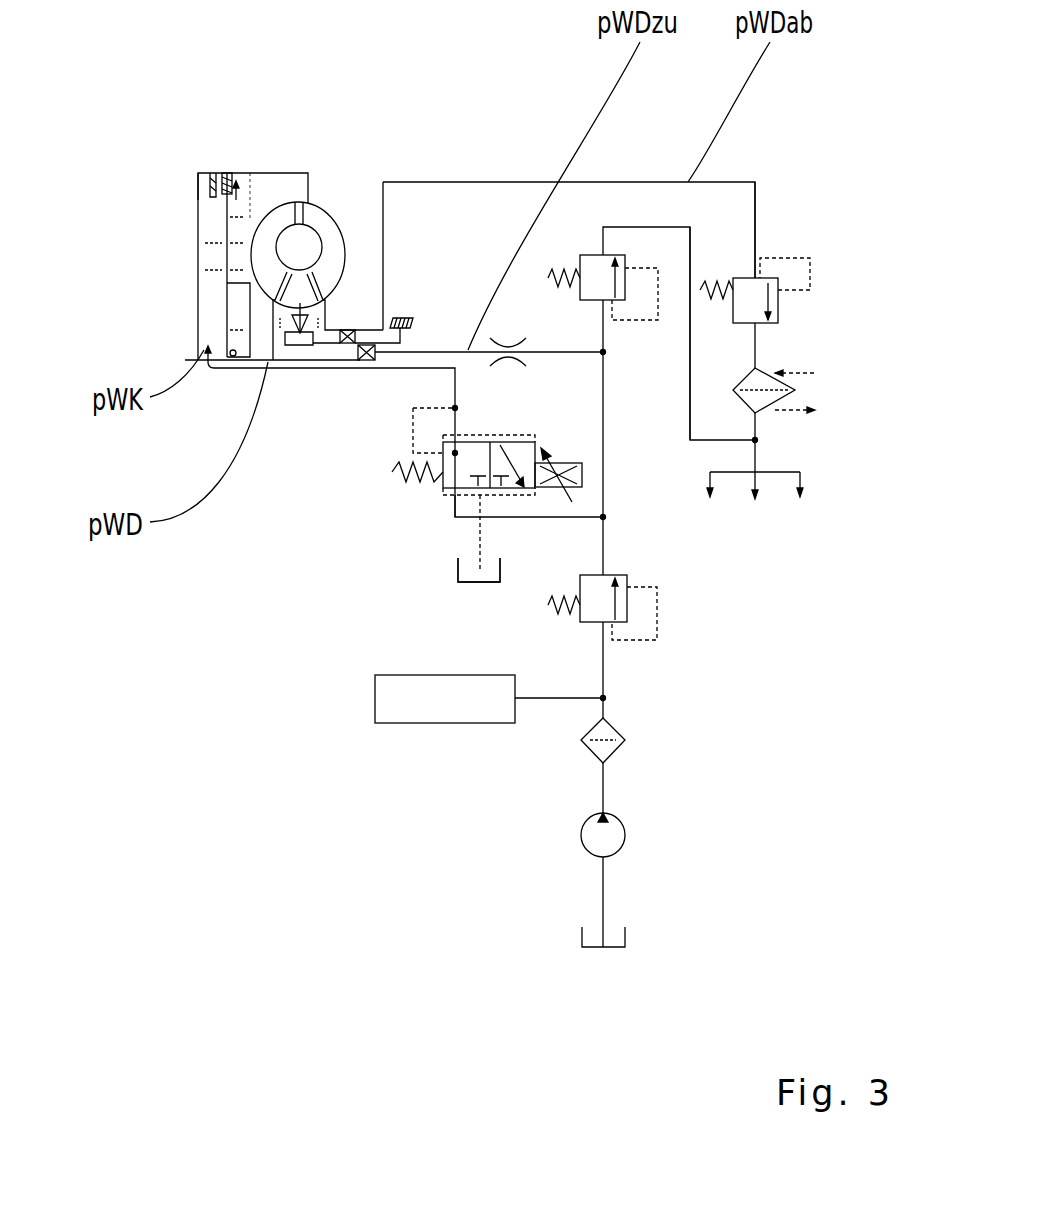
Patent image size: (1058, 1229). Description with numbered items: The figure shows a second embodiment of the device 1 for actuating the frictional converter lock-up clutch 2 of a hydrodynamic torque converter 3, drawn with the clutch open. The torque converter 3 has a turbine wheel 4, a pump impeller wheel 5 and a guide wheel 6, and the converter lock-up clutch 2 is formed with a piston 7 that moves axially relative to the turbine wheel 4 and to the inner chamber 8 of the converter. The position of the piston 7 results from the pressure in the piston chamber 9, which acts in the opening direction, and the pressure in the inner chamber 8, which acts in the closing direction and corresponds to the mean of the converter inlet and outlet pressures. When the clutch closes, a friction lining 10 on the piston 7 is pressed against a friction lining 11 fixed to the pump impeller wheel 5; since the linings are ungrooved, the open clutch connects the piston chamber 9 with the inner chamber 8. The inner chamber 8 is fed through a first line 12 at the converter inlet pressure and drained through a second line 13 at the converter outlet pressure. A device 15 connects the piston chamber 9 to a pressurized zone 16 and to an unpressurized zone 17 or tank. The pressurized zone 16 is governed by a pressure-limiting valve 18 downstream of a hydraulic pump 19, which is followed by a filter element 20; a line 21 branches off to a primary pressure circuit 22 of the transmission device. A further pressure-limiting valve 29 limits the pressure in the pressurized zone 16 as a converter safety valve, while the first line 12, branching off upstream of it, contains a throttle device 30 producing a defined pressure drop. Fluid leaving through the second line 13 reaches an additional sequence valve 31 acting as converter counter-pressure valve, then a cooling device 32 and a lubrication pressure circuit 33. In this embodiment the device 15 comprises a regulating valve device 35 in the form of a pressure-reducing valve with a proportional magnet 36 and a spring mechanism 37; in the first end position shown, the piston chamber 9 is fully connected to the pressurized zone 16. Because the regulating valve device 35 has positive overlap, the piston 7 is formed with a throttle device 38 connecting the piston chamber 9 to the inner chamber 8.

The device 1 is at (775, 158).
The converter lock-up clutch 2 is at (227, 160).
The hydrodynamic torque converter 3 is at (342, 198).
The turbine wheel 4 is at (272, 220).
The pump impeller wheel 5 is at (384, 240).
The guide wheel 6 is at (275, 300).
The piston 7 is at (223, 243).
The inner chamber 8 is at (262, 185).
The piston chamber 9 is at (207, 208).
The friction lining 10 is at (201, 168).
The friction lining 11 is at (196, 170).
The first line 12 is at (557, 354).
The second line 13 is at (497, 182).
The device 15 is at (458, 570).
The pressurized zone 16 is at (622, 472).
The unpressurized zone 17 is at (488, 593).
The pressure-limiting valve 18 is at (627, 590).
The hydraulic pump 19 is at (625, 832).
The filter element 20 is at (626, 742).
The line 21 is at (558, 700).
The primary pressure circuit 22 is at (395, 698).
The further pressure-limiting valve 29 is at (627, 268).
The throttle device 30 is at (507, 347).
The additional sequence valve 31 is at (778, 292).
The cooling device 32 is at (795, 391).
The lubrication pressure circuit 33 is at (777, 478).
The regulating valve device 35 is at (378, 465).
The proportional magnet 36 is at (583, 473).
The spring mechanism 37 is at (428, 504).
The throttle device 38 is at (217, 298).